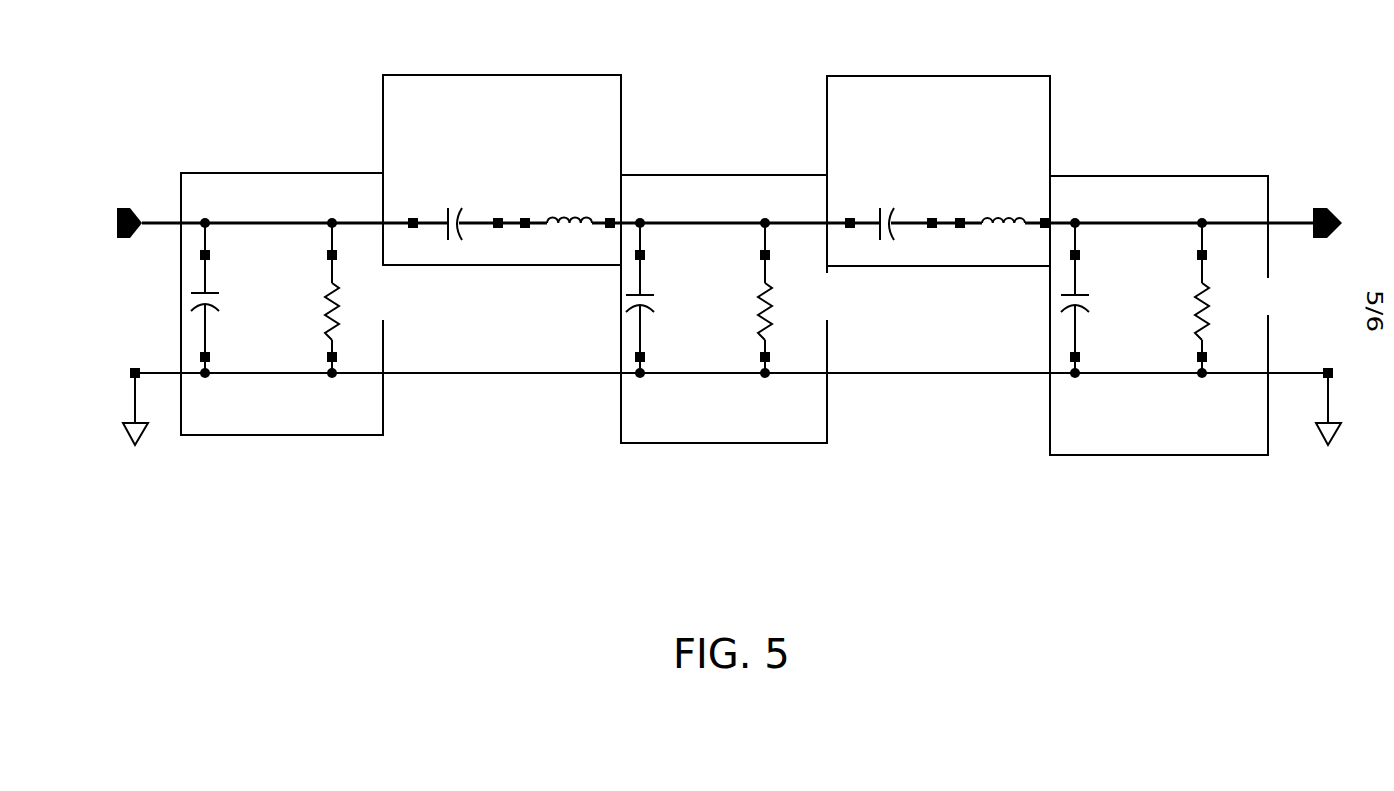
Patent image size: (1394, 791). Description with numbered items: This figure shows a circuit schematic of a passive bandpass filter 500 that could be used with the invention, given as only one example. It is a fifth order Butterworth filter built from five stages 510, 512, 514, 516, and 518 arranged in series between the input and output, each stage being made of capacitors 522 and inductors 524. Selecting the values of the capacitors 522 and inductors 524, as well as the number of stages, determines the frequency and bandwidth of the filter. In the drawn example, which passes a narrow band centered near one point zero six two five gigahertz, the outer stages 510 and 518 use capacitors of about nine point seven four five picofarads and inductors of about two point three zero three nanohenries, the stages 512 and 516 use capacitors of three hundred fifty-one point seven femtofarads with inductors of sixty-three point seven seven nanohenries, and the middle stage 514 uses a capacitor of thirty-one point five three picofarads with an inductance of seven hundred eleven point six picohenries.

The bandpass filter circuit 500 is at (732, 307).
The first stage 510 is at (270, 435).
The second stage 512 is at (510, 265).
The third stage 514 is at (712, 443).
The fourth stage 516 is at (942, 267).
The fifth stage 518 is at (1137, 455).
The capacitors 522 is at (198, 254).
The inductors 524 is at (325, 254).